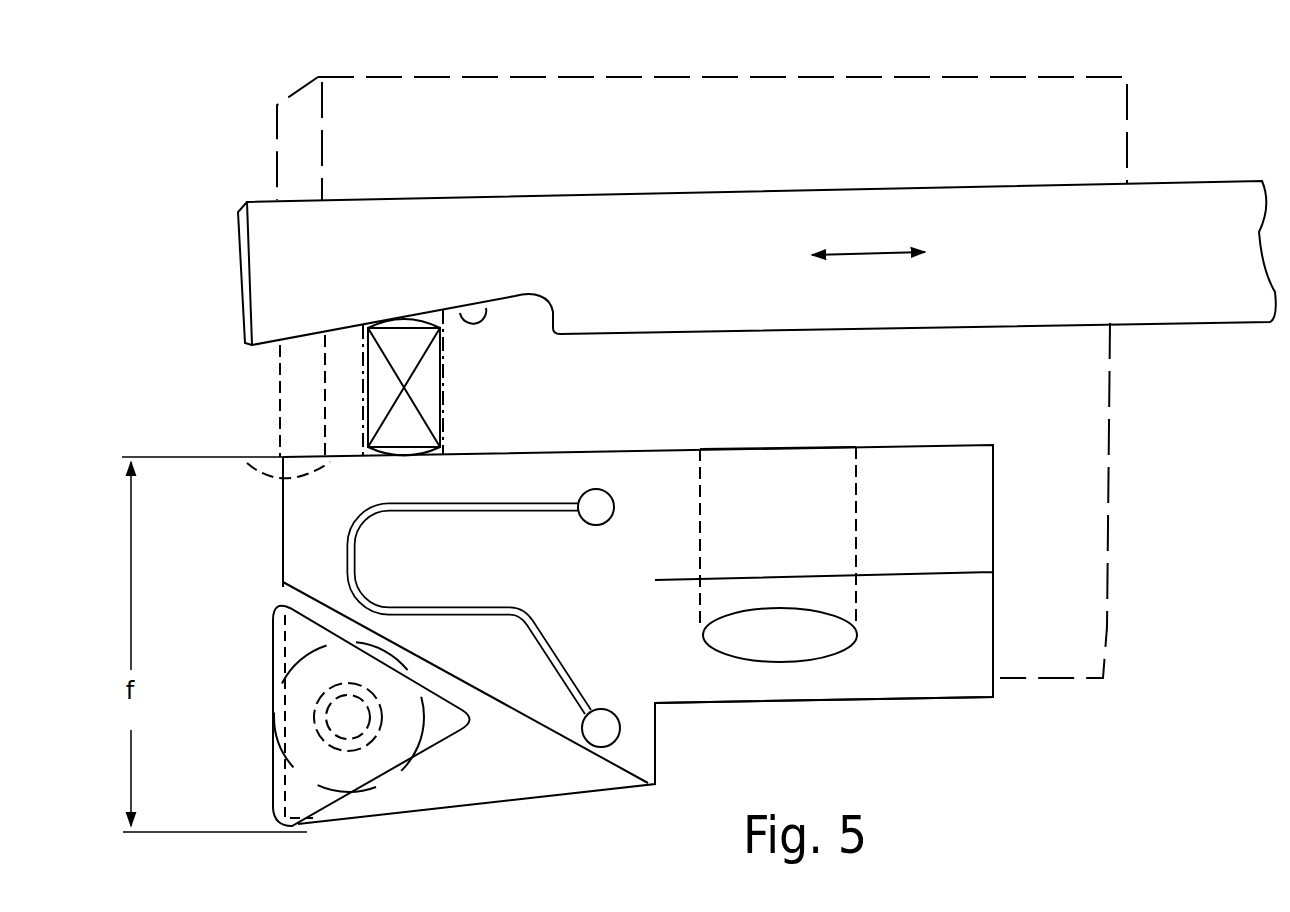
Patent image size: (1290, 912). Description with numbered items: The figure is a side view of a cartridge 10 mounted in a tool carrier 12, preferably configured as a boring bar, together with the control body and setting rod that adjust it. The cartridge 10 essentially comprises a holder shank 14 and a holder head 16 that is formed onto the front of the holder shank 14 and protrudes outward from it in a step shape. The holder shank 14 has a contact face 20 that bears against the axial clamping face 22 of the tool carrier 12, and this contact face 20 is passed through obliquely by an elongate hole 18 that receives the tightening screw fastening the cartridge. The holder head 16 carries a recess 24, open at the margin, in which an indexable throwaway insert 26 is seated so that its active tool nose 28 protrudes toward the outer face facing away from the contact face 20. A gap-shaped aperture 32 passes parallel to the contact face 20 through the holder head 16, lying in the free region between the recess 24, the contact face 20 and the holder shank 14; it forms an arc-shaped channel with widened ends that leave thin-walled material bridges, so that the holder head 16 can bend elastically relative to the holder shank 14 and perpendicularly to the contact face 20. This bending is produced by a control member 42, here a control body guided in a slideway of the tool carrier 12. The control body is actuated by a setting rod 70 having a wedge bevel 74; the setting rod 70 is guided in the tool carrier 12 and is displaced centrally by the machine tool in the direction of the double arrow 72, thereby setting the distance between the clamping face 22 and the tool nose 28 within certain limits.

The cartridge 10 is at (622, 595).
The tool carrier 12 is at (660, 142).
The holder shank 14 is at (538, 482).
The holder head 16 is at (933, 487).
The elongate hole 18 is at (812, 635).
The contact face 20 is at (882, 447).
The clamping face 22 is at (250, 462).
The recess 24 is at (297, 590).
The indexable throwaway insert 26 is at (273, 622).
The tool nose 28 is at (303, 827).
The gap-shaped aperture 32 is at (495, 600).
The control member 42 is at (425, 397).
The setting rod 70 is at (830, 203).
The double arrow 72 is at (867, 253).
The wedge bevel 74 is at (487, 317).